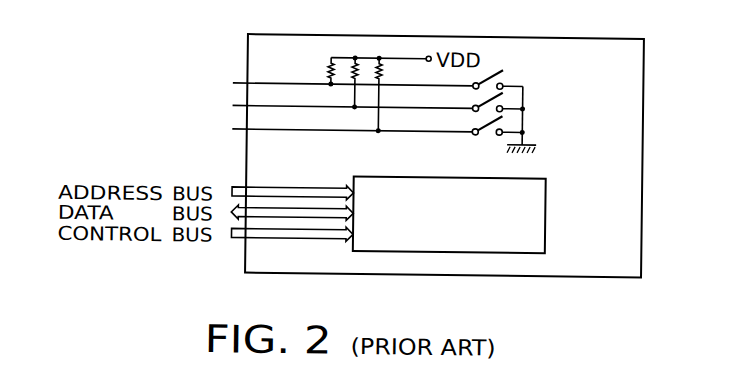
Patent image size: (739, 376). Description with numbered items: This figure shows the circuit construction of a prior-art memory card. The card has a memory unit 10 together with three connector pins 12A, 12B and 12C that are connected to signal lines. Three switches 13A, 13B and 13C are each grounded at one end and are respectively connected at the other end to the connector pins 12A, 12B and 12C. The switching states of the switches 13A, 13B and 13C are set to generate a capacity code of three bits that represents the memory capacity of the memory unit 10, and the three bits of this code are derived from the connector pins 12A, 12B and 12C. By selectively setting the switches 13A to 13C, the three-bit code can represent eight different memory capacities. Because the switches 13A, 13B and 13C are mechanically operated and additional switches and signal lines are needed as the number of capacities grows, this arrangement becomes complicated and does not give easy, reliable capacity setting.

The memory unit 10 is at (546, 218).
The connector pin 12A is at (236, 86).
The connector pin 12B is at (236, 108).
The connector pin 12C is at (236, 132).
The switch 13A is at (487, 76).
The switch 13B is at (477, 102).
The switch 13C is at (477, 126).